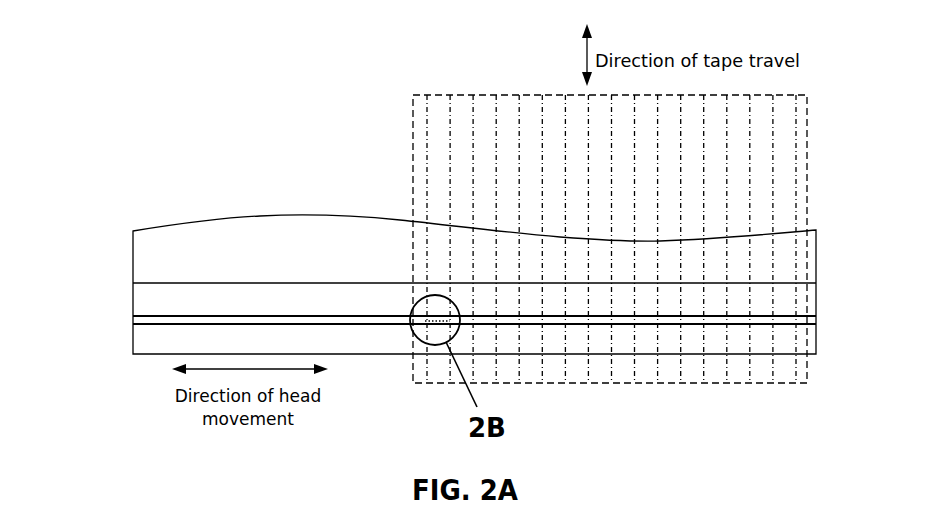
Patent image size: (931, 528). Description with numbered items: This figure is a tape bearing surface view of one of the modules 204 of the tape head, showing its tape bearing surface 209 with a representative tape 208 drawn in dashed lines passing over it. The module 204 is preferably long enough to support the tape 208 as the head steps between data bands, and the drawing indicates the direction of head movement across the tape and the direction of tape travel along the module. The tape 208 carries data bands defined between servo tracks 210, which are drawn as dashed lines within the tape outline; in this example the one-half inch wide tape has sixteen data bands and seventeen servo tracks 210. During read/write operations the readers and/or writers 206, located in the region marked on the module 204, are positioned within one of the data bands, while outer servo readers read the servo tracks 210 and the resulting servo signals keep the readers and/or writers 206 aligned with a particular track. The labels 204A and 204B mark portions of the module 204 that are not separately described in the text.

The module 204 is at (172, 204).
The first head module 204A is at (262, 216).
The second head module 204B is at (133, 340).
The readers and/or writers 206 is at (410, 318).
The tape 208 is at (413, 99).
The tape bearing surface 209 is at (318, 305).
The servo tracks 210 is at (517, 178).